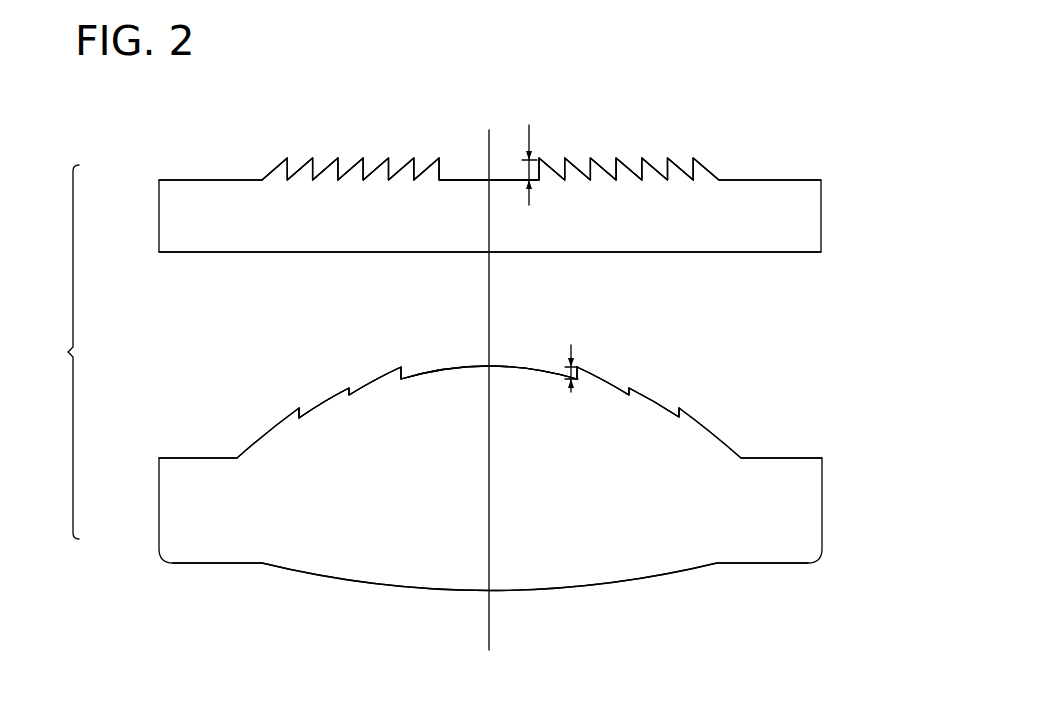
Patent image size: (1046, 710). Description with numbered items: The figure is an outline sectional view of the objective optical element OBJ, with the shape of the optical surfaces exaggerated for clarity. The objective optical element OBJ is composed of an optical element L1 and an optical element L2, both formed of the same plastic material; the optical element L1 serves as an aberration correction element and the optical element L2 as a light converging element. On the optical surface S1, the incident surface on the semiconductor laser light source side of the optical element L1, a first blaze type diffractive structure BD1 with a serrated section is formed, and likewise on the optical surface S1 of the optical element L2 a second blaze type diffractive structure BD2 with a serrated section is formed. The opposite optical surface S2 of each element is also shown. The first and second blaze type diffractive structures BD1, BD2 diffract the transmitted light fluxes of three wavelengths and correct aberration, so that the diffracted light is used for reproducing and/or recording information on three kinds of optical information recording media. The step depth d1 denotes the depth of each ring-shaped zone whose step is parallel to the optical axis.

The objective optical element OBJ is at (49, 352).
The optical element L1 is at (807, 217).
The optical element L2 is at (807, 505).
The optical surface S1 is at (750, 166).
The optical surface S2 is at (722, 259).
The first blaze type diffractive structure BD1 is at (601, 150).
The second blaze type diffractive structure BD2 is at (617, 344).
The step depth d1 is at (563, 258).